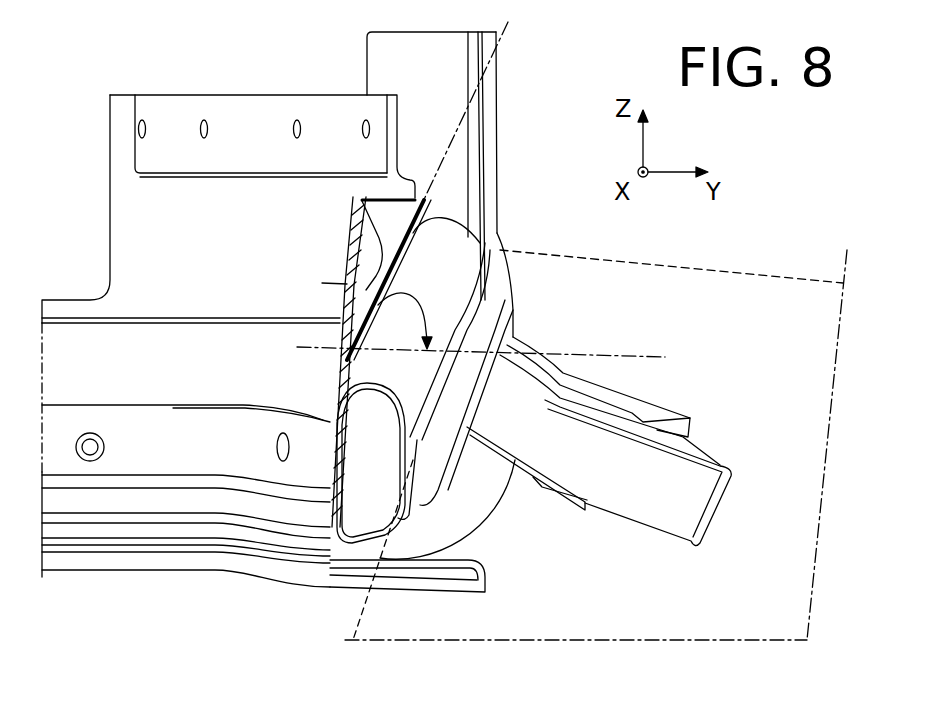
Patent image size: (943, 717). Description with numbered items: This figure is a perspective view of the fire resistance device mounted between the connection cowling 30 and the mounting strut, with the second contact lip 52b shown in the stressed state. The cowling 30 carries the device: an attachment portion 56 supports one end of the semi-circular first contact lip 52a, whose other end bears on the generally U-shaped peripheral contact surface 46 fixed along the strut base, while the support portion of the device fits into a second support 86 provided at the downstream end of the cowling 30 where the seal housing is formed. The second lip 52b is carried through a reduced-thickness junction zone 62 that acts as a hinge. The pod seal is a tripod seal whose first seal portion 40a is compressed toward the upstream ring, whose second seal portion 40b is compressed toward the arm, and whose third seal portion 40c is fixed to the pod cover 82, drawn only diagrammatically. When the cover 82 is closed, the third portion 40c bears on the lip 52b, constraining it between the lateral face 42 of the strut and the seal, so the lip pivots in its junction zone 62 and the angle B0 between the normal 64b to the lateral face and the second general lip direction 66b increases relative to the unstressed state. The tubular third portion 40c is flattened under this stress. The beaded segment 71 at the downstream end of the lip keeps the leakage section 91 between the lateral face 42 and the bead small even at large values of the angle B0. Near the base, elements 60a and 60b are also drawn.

The connection cowling 30 is at (102, 245).
The first seal portion 40a is at (633, 477).
The second seal portion 40b is at (490, 90).
The third seal portion 40c is at (433, 308).
The lateral face 42 is at (330, 412).
The peripheral contact surface 46 is at (413, 570).
The first contact lip 52a is at (145, 538).
The second contact lip 52b is at (375, 342).
The attachment portion 56 is at (58, 430).
The lower wall 60a is at (60, 500).
The upper wall plate 60b is at (393, 217).
The junction zone 62 is at (403, 280).
The normal 64b is at (297, 347).
The second general lip direction 66b is at (458, 128).
The beaded segment 71 is at (488, 518).
The pod cover 82 is at (770, 290).
The second support 86 is at (353, 230).
The leakage section 91 is at (348, 552).
The angle of inclination B0 is at (412, 297).